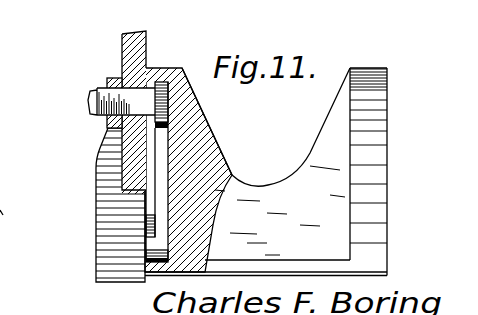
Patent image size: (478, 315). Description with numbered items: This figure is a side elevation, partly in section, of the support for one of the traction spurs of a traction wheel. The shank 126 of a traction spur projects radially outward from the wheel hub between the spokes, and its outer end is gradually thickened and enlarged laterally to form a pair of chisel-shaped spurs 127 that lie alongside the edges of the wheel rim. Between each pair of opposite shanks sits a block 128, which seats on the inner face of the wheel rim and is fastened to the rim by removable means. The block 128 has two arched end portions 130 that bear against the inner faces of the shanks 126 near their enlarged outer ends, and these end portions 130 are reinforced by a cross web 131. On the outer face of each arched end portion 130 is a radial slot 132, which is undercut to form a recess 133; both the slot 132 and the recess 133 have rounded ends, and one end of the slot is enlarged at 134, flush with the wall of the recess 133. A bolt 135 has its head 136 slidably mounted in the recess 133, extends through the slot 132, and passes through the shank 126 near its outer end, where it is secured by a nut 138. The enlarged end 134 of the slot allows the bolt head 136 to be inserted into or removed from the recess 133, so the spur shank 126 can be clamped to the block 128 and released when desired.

The shank 126 is at (147, 34).
The chisel-shaped spur 127 is at (100, 272).
The block 128 is at (376, 268).
The arched end portion 130 is at (385, 90).
The cross web 131 is at (272, 190).
The radial slot 132 is at (150, 168).
The recess 133 is at (163, 156).
The enlarged end of the slot 134 is at (152, 243).
The bolt 135 is at (97, 99).
The bolt head 136 is at (162, 100).
The nut 138 is at (108, 82).